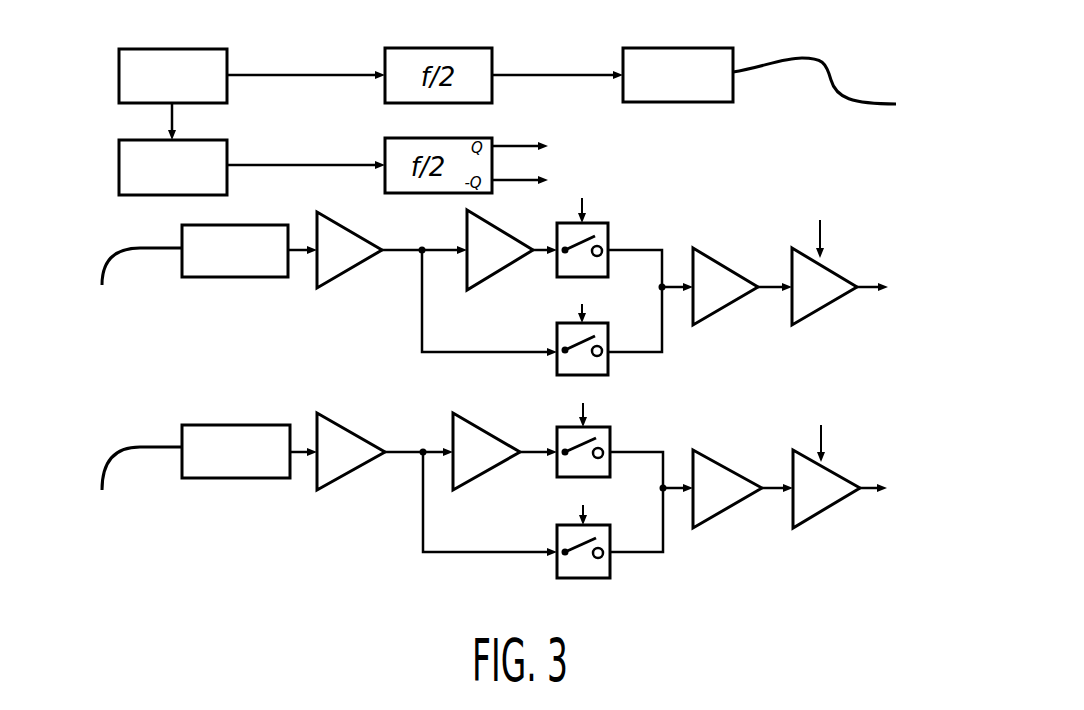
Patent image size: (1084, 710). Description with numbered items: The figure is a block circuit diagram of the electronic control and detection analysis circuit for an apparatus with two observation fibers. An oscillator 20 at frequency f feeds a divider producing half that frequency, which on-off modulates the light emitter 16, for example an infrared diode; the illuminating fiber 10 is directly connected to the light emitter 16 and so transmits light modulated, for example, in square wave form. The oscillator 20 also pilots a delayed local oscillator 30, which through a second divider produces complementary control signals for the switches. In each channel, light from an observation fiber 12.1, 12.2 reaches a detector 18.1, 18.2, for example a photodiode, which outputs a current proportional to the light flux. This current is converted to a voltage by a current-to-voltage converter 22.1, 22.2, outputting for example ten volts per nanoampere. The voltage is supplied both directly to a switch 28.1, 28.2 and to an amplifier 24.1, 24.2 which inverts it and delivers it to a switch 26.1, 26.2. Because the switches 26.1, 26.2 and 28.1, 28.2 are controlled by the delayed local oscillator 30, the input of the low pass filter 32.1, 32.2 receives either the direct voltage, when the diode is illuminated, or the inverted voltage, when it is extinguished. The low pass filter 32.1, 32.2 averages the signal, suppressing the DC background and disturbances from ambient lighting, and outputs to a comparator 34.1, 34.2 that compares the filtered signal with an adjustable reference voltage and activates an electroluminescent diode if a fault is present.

The illuminating fiber 10 is at (831, 86).
The observation fiber 12.1 is at (130, 283).
The observation fiber 12.2 is at (130, 488).
The light emitter 16 is at (698, 48).
The detector 18.1 is at (212, 277).
The detector 18.2 is at (217, 478).
The oscillator 20 is at (203, 49).
The current-to-voltage converter 22.1 is at (346, 265).
The current-to-voltage converter 22.2 is at (356, 465).
The amplifier 24.1 is at (494, 265).
The amplifier 24.2 is at (481, 465).
The switch 26.1 is at (603, 223).
The switch 26.2 is at (601, 427).
The switch 28.1 is at (606, 372).
The switch 28.2 is at (607, 578).
The delayed local oscillator 30 is at (207, 140).
The low pass filter 32.1 is at (723, 305).
The low pass filter 32.2 is at (723, 507).
The comparator 34.1 is at (831, 305).
The comparator 34.2 is at (831, 507).